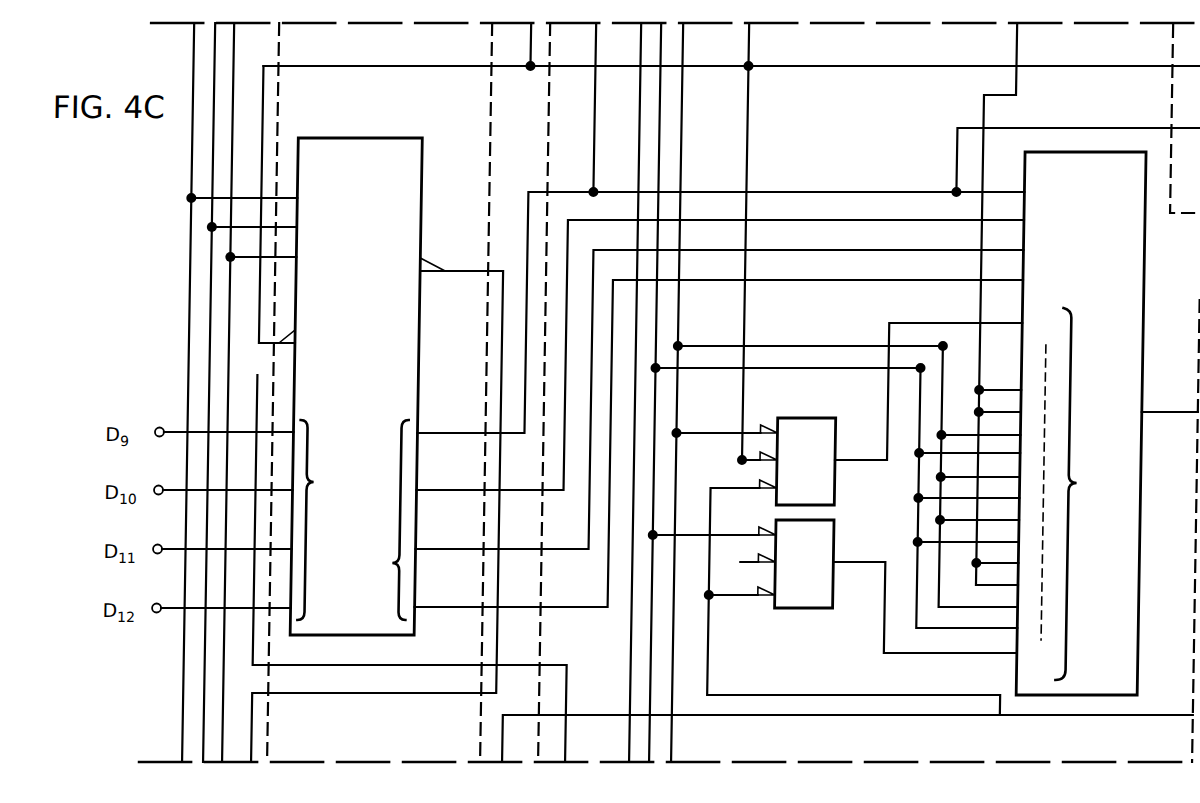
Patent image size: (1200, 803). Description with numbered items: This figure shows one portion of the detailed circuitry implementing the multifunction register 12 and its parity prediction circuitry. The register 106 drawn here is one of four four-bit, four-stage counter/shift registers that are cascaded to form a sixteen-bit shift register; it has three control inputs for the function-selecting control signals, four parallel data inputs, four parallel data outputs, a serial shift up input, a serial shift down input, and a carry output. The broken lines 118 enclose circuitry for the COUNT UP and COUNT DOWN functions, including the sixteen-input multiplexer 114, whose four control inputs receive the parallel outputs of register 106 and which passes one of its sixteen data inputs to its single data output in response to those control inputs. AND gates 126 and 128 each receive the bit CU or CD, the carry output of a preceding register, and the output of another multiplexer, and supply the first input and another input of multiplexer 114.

The multifunction register 12 is at (276, 108).
The 4-bit register 106 is at (412, 138).
The broken lines 118 is at (545, 160).
The multiplexer 114 is at (1105, 152).
The AND gate 126 is at (803, 418).
The AND gate 128 is at (812, 608).